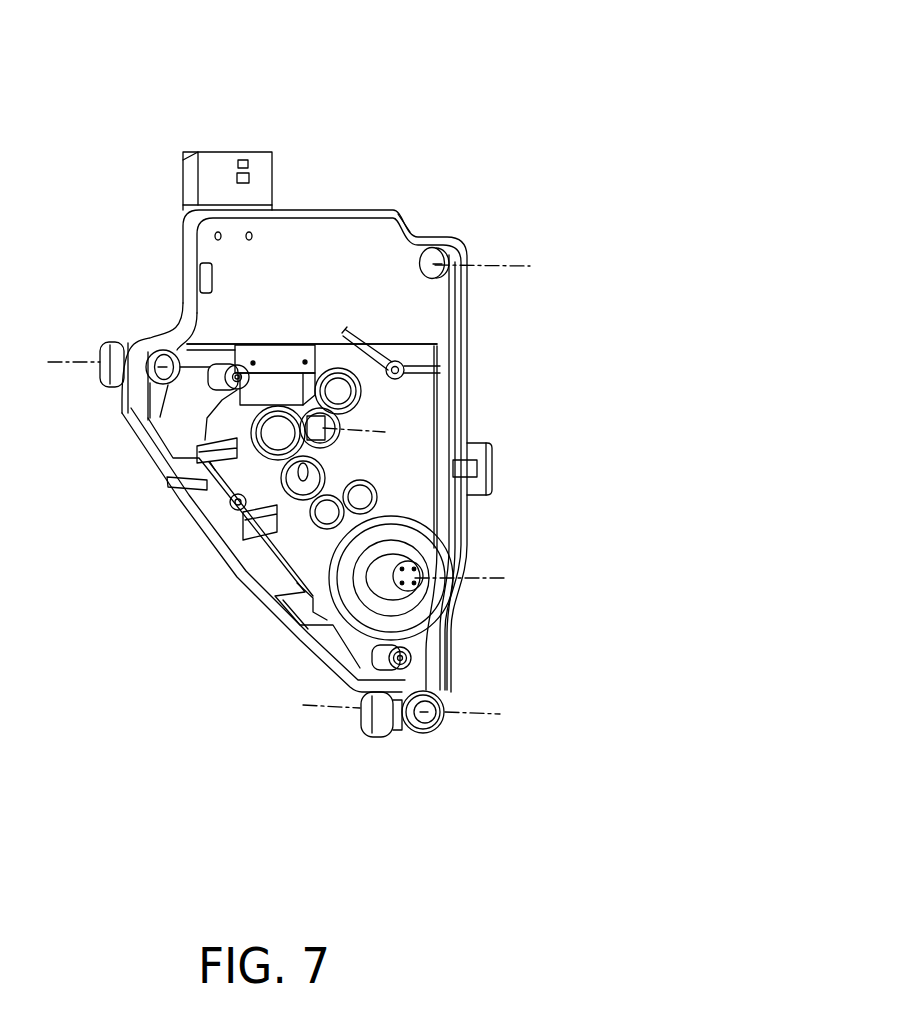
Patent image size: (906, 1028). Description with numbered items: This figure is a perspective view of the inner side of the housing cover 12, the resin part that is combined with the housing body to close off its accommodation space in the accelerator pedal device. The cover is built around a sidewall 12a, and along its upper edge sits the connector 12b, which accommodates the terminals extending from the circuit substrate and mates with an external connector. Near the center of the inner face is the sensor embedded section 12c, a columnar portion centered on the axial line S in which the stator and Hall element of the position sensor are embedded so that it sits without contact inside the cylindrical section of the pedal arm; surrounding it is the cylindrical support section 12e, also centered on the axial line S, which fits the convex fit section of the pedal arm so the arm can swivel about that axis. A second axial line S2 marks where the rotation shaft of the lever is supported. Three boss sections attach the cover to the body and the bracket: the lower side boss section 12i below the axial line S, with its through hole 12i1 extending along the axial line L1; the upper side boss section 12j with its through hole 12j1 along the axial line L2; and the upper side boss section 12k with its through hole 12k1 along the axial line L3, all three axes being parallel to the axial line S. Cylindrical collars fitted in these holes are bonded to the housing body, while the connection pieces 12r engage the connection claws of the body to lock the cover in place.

The housing cover 12 is at (380, 145).
The connector 12b is at (233, 152).
The upper side boss section 12k is at (431, 233).
The through hole 12k1 is at (462, 255).
The sidewall 12a is at (400, 398).
The connection pieces 12r is at (492, 458).
The upper side boss section 12j is at (113, 378).
The through hole 12j1 is at (163, 407).
The support section 12e is at (332, 558).
The sensor embedded section 12c is at (417, 590).
The lower side boss section 12i is at (377, 723).
The through hole 12i1 is at (430, 737).
The axial line S is at (490, 578).
The axial line S2 is at (367, 433).
The axial line L1 is at (485, 714).
The axial line L2 is at (80, 362).
The axial line L3 is at (493, 267).